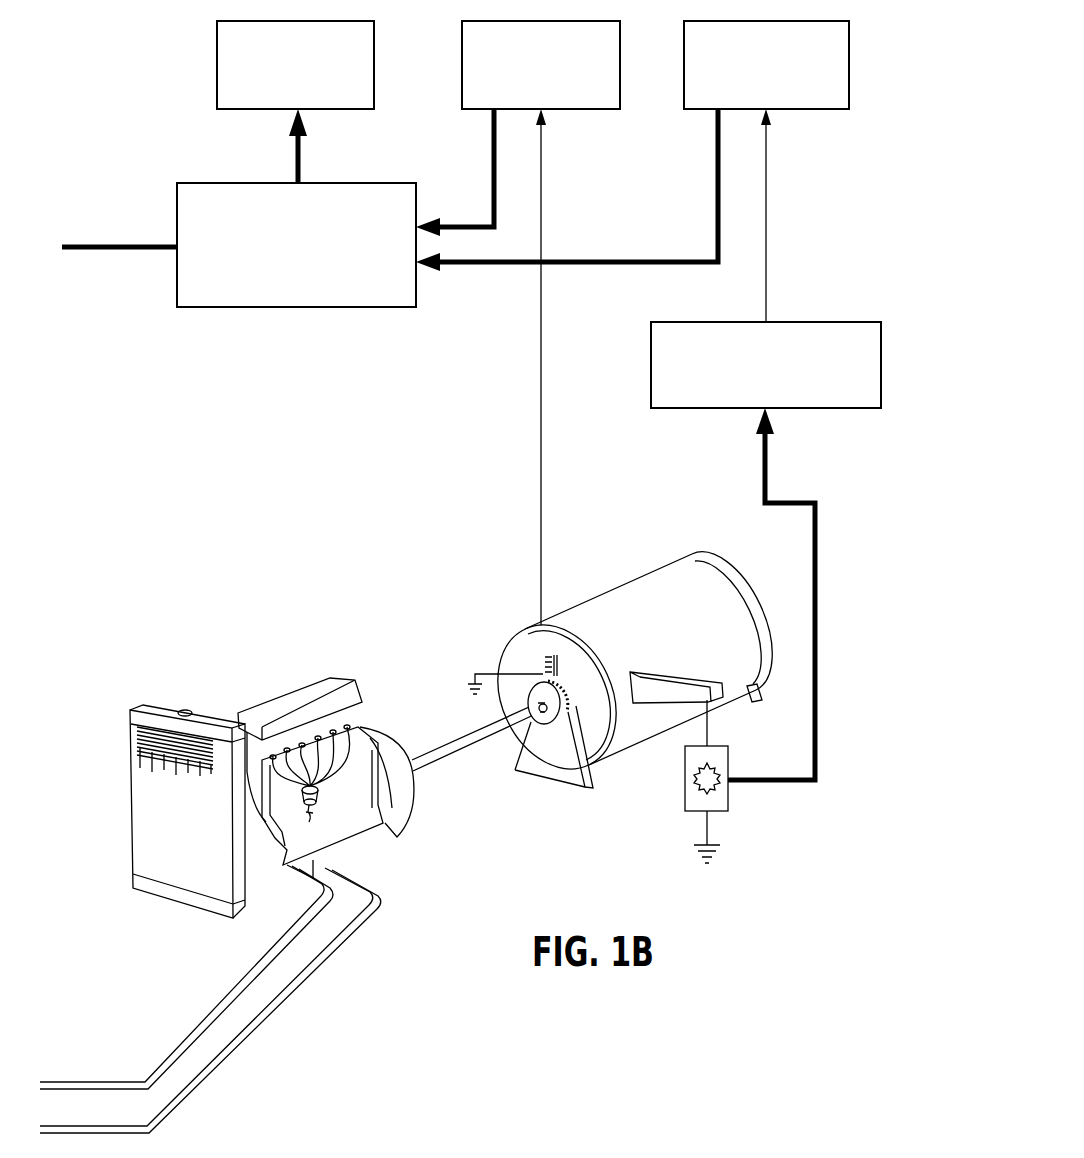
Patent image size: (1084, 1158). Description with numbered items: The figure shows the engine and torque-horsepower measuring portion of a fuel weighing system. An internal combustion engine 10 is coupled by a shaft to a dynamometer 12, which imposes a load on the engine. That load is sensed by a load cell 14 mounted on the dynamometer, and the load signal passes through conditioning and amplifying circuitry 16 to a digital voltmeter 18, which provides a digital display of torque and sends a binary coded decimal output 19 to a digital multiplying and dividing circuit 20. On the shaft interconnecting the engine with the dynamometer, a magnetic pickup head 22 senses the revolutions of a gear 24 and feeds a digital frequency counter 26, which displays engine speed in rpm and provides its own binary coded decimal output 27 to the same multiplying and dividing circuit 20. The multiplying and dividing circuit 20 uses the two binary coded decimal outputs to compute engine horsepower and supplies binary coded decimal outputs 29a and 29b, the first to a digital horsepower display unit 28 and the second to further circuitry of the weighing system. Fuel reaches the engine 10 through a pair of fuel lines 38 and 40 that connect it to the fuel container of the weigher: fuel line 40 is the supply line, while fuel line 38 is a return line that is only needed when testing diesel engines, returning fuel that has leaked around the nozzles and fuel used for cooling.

The internal combustion engine 10 is at (295, 684).
The dynamometer 12 is at (618, 592).
The load cell 14 is at (728, 812).
The conditioning and amplifying circuitry 16 is at (714, 410).
The digital voltmeter 18 is at (812, 109).
The binary coded decimal output 19 is at (718, 181).
The digital multiplying and dividing circuit 20 is at (342, 308).
The magnetic pickup head 22 is at (542, 662).
The gear 24 is at (556, 700).
The digital frequency counter 26 is at (598, 109).
The binary coded decimal output 27 is at (494, 163).
The digital horsepower display unit 28 is at (356, 109).
The binary coded decimal output 29a is at (296, 153).
The binary coded decimal output 29b is at (116, 245).
The fuel line 38 is at (245, 988).
The fuel line 40 is at (287, 995).